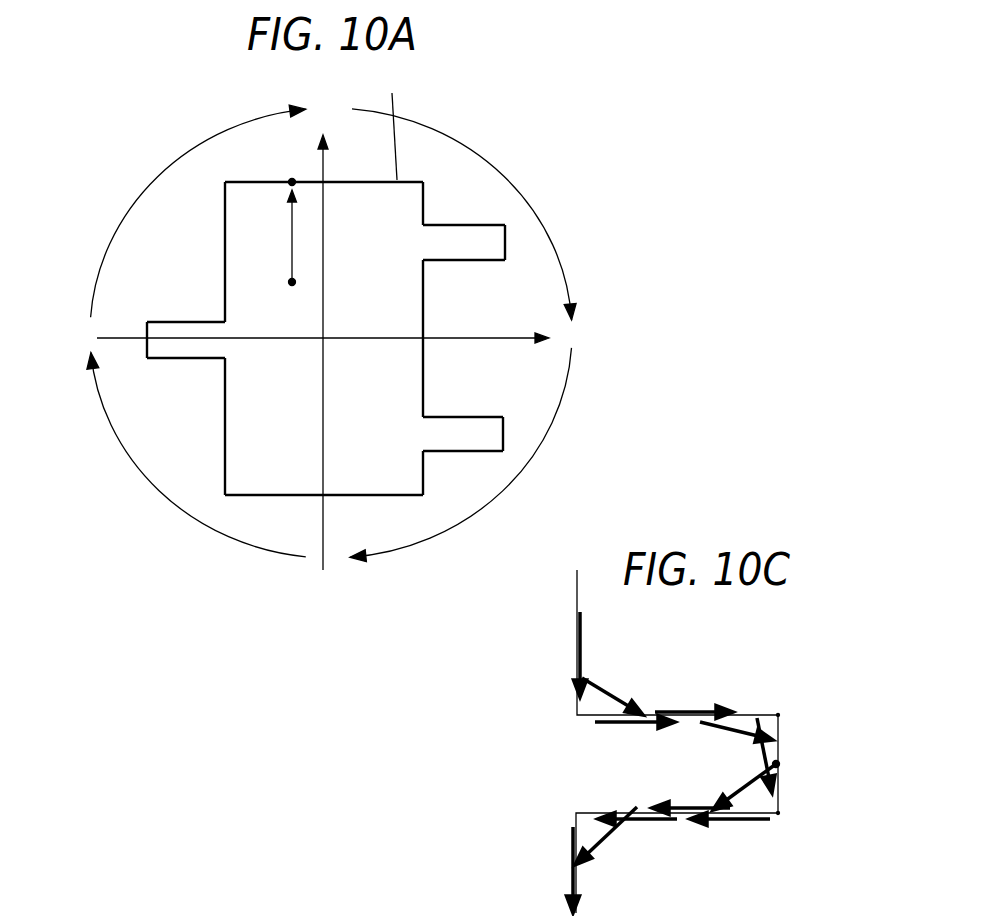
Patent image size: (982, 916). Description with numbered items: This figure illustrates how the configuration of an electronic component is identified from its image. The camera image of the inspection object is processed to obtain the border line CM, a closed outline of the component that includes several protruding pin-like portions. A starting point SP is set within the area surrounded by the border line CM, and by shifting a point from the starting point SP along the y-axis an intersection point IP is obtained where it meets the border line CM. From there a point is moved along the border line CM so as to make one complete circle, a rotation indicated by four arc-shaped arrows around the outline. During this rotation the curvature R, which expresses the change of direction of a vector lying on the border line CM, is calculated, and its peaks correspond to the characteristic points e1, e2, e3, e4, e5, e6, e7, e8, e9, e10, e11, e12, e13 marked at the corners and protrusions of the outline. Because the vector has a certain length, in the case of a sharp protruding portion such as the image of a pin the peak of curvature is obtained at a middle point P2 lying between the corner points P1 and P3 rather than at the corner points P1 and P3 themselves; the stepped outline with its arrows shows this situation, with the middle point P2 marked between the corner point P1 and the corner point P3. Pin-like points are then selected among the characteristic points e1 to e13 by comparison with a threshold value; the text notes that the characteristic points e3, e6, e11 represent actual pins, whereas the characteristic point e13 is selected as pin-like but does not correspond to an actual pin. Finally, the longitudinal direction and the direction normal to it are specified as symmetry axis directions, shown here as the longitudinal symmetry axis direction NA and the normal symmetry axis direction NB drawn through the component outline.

In FIG. 10A, the characteristic point e1 is at (423, 182).
In FIG. 10A, the characteristic point e2 is at (423, 225).
In FIG. 10A, the characteristic point e3 is at (505, 243).
In FIG. 10A, the characteristic point e4 is at (423, 260).
In FIG. 10A, the characteristic point e5 is at (423, 417).
In FIG. 10A, the characteristic point e6 is at (503, 434).
In FIG. 10A, the characteristic point e7 is at (423, 451).
In FIG. 10A, the characteristic point e8 is at (423, 495).
In FIG. 10A, the characteristic point e9 is at (225, 495).
In FIG. 10A, the characteristic point e10 is at (225, 358).
In FIG. 10A, the characteristic point e11 is at (147, 338).
In FIG. 10A, the characteristic point e12 is at (225, 322).
In FIG. 10A, the characteristic point e13 is at (225, 182).
In FIG. 10A, the border line CM is at (388, 122).
In FIG. 10A, the intersection point IP is at (292, 182).
In FIG. 10A, the starting point SP is at (292, 282).
In FIG. 10A, the symmetry axis direction NA is at (347, 352).
In FIG. 10A, the symmetry axis direction NB is at (323, 356).
In FIG. 10C, the corner point P1 is at (778, 715).
In FIG. 10C, the middle point P2 is at (776, 764).
In FIG. 10C, the corner point P3 is at (778, 813).